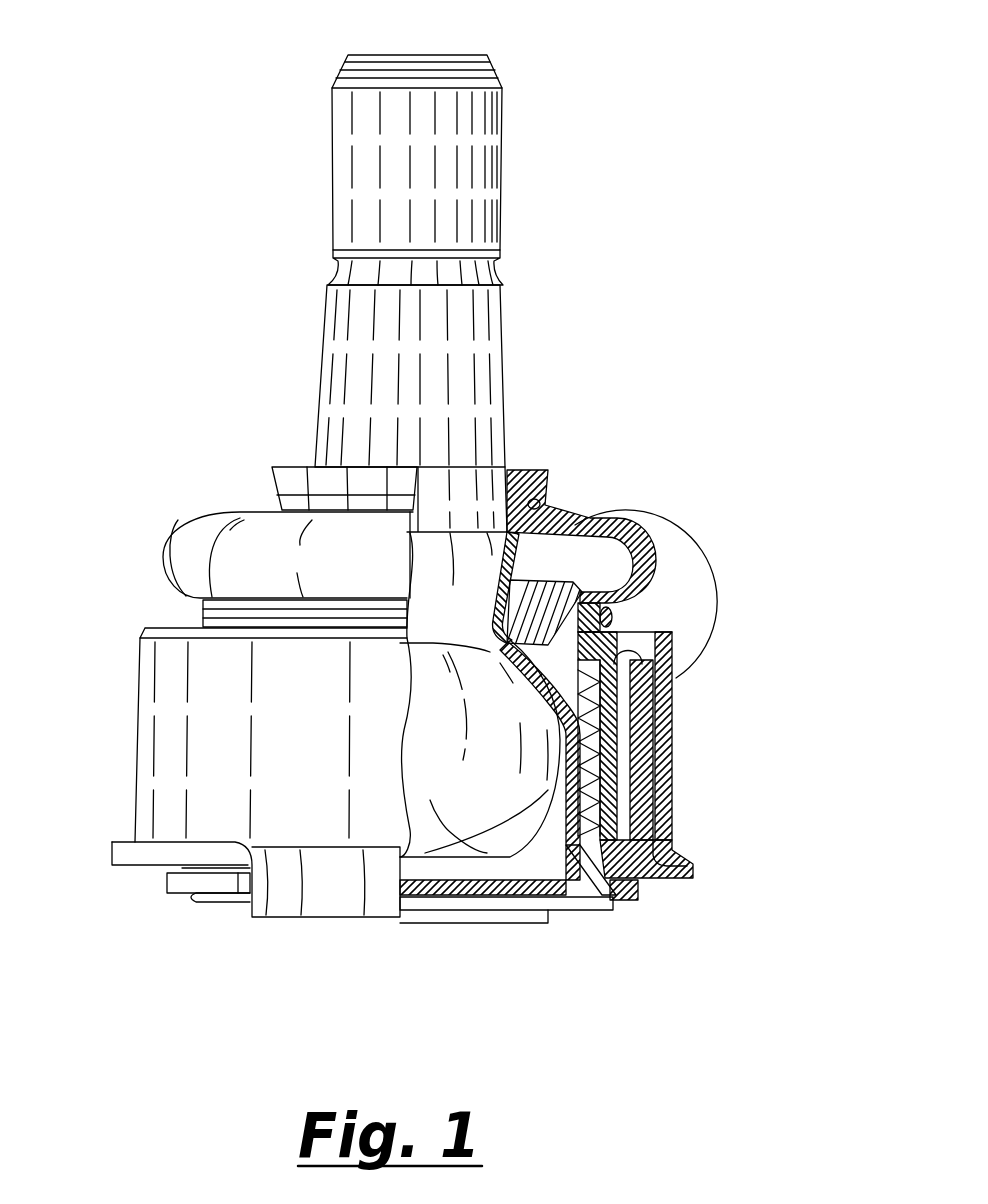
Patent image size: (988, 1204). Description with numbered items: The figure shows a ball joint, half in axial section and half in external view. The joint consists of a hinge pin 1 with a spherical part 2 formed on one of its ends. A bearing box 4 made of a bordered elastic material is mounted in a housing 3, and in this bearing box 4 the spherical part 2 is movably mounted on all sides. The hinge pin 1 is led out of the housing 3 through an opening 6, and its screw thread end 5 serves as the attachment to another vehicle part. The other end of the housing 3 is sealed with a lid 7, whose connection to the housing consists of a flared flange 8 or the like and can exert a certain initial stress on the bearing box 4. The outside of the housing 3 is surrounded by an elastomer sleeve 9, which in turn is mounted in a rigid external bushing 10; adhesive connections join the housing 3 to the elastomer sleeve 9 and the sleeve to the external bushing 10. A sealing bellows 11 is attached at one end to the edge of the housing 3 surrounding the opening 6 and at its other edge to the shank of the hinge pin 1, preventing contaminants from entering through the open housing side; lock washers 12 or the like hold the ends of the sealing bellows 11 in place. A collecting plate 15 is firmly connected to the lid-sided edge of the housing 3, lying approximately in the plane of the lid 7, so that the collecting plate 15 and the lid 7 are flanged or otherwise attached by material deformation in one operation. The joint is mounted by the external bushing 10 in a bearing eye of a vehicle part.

The hinge pin 1 is at (460, 350).
The spherical part 2 is at (432, 797).
The housing 3 is at (612, 634).
The bearing box 4 is at (650, 877).
The screw thread end 5 is at (468, 160).
The opening 6 is at (530, 588).
The lid 7 is at (506, 893).
The flared flange 8 is at (592, 897).
The elastomer sleeve 9 is at (643, 755).
The external bushing 10 is at (660, 770).
The sealing bellows 11 is at (202, 550).
The lock washers 12 is at (320, 502).
The collecting plate 15 is at (222, 885).